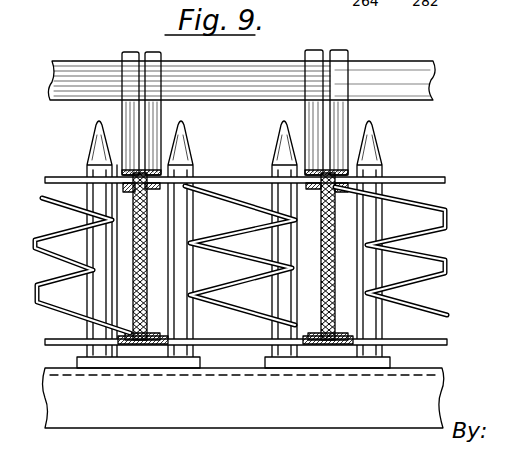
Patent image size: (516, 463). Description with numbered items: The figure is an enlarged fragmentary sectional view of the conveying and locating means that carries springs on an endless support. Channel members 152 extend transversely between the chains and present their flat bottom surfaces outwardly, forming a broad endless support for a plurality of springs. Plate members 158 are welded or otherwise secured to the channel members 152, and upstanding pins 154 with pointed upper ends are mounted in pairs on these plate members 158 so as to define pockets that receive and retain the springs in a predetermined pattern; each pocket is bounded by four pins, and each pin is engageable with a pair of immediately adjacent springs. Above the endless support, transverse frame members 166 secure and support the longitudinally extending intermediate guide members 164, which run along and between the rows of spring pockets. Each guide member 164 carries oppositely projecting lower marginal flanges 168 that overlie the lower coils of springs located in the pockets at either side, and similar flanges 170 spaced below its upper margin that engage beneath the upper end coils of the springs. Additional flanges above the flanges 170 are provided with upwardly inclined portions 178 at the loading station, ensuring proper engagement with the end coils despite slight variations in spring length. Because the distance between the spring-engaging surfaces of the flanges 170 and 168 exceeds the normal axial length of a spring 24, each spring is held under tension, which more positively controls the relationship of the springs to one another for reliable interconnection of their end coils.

The coil spring 24 is at (433, 274).
The channel members 152 is at (427, 388).
The upstanding pins 154 is at (370, 136).
The plate members 158 is at (157, 385).
The intermediate guide members 164 is at (178, 110).
The transverse frame members 166 is at (416, 68).
The lower marginal flanges 168 is at (151, 341).
The flanges 170 is at (128, 200).
The upwardly inclined portions 178 is at (150, 162).